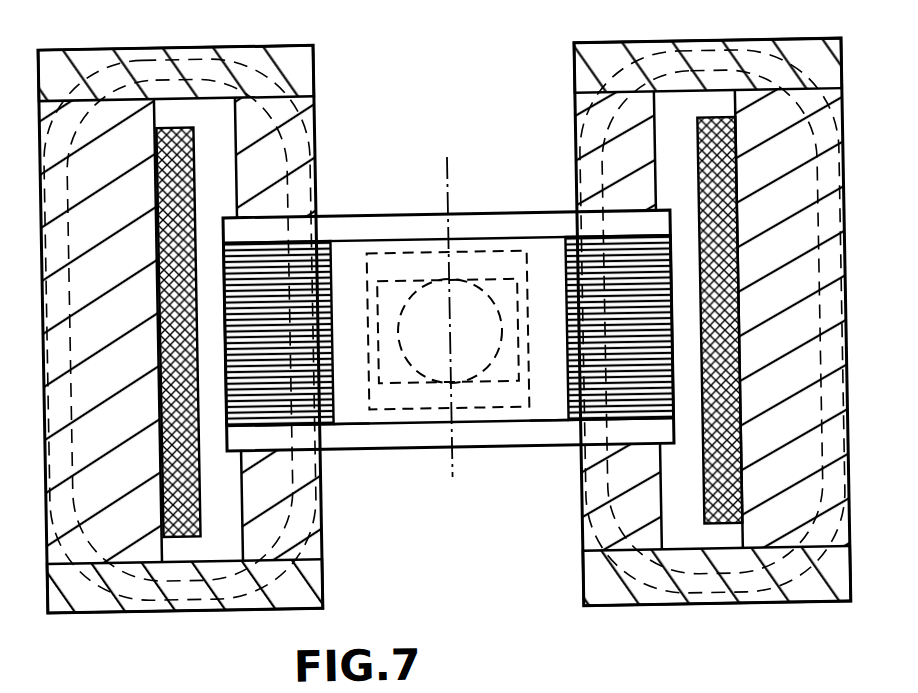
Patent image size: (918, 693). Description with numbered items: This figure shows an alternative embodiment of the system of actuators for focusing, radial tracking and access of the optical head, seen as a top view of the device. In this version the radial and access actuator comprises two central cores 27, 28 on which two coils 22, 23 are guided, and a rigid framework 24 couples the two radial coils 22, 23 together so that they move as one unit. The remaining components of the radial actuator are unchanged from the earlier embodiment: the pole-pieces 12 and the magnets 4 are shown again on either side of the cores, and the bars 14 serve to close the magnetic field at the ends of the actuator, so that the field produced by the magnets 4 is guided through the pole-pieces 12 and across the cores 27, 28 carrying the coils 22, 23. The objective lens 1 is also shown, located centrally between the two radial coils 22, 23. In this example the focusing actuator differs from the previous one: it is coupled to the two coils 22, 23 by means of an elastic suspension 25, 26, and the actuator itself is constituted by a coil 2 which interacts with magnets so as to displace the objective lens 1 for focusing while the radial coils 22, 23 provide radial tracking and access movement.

The objective lens 1 is at (470, 292).
The coil 2 is at (417, 410).
The magnets 4 is at (199, 169).
The pole-pieces 12 is at (142, 605).
The bars 14 is at (305, 72).
The coil 22 is at (322, 298).
The coil 23 is at (574, 290).
The rigid framework 24 is at (497, 440).
The elastic suspension 25 is at (552, 392).
The elastic suspension 26 is at (358, 398).
The central core 27 is at (298, 548).
The central core 28 is at (585, 536).